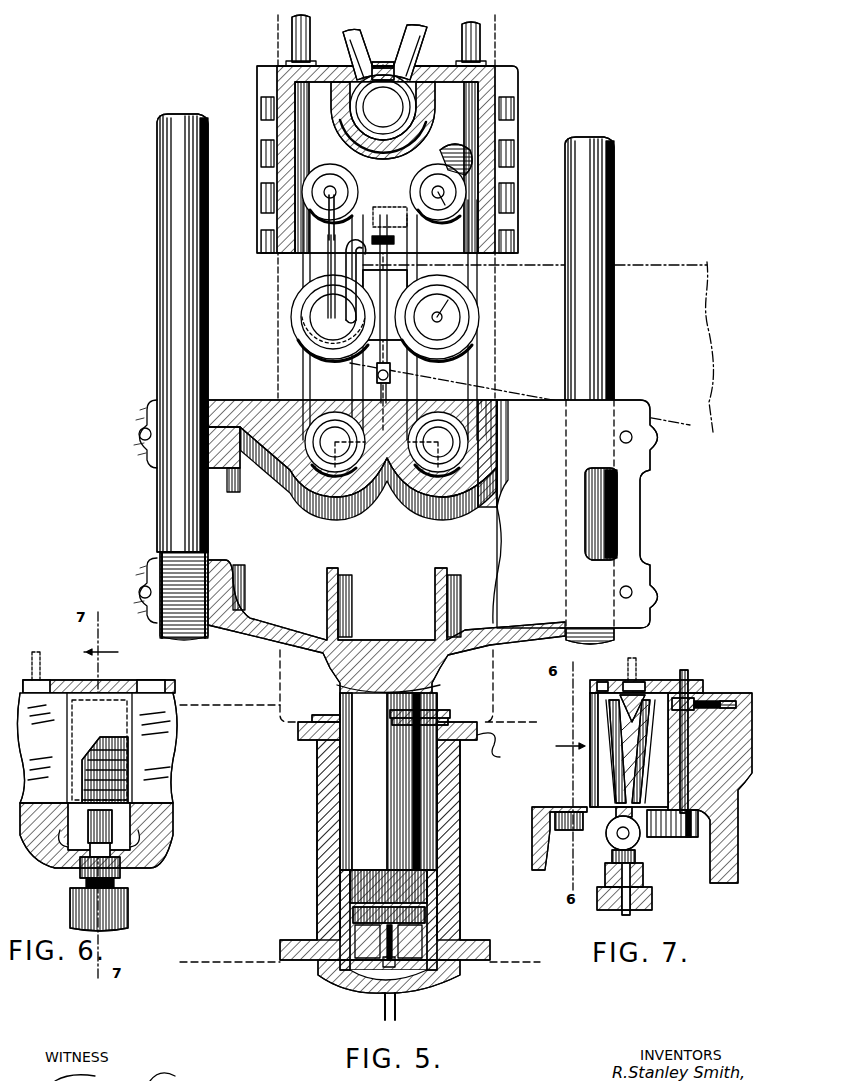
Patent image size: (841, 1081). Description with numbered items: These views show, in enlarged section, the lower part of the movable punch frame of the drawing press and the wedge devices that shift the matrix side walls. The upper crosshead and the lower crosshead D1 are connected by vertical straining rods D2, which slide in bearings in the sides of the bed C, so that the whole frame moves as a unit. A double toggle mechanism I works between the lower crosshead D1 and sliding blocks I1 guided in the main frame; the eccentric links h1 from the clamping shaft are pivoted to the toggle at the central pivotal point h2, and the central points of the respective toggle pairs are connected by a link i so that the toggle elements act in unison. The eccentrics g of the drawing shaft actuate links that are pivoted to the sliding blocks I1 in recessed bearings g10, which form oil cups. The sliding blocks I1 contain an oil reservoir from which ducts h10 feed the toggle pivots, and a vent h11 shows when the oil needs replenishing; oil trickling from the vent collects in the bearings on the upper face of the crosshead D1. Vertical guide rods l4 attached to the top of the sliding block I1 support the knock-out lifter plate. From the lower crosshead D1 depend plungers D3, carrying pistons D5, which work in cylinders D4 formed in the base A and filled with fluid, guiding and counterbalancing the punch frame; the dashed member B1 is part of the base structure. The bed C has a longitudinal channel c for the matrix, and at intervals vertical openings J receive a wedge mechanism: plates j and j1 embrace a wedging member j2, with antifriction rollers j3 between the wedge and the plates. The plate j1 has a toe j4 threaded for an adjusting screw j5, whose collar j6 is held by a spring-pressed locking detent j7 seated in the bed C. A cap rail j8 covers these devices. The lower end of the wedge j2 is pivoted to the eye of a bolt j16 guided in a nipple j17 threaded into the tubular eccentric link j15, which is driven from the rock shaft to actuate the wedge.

In FIG. 5, the vertical guide rods l4 is at (312, 30).
In FIG. 5, the eccentrics g is at (388, 40).
In FIG. 5, the recessed bearings g10 is at (420, 62).
In FIG. 5, the sliding blocks I1 is at (520, 113).
In FIG. 5, the straining rods D2 is at (168, 236).
In FIG. 5, the ducts h10 is at (325, 240).
In FIG. 5, the vent h11 is at (342, 258).
In FIG. 5, the toggle mechanism I is at (292, 318).
In FIG. 5, the central pivotal point h2 is at (318, 328).
In FIG. 5, the link i is at (397, 300).
In FIG. 5, the eccentric links h1 is at (705, 305).
In FIG. 5, the lower crosshead D1 is at (396, 561).
In FIG. 5, the bed B1 is at (480, 670).
In FIG. 5, the base A is at (492, 752).
In FIG. 5, the plungers D3 is at (360, 790).
In FIG. 5, the cylinders D4 is at (435, 870).
In FIG. 5, the pistons D5 is at (357, 945).
In FIG. 6, the cap rail j8 is at (150, 680).
In FIG. 7, the cap rail j8 is at (648, 680).
In FIG. 6, the plate j is at (88, 735).
In FIG. 7, the plate j is at (592, 720).
In FIG. 6, the vertical openings J is at (130, 763).
In FIG. 7, the vertical openings J is at (672, 693).
In FIG. 6, the antifriction rollers j3 is at (128, 783).
In FIG. 7, the antifriction rollers j3 is at (610, 760).
In FIG. 6, the wedging member j2 is at (120, 852).
In FIG. 7, the wedging member j2 is at (622, 690).
In FIG. 6, the bolt j16 is at (80, 860).
In FIG. 7, the bolt j16 is at (635, 853).
In FIG. 6, the nipple j17 is at (118, 884).
In FIG. 7, the nipple j17 is at (605, 878).
In FIG. 6, the eccentric link j15 is at (70, 908).
In FIG. 7, the eccentric link j15 is at (600, 908).
In FIG. 7, the adjusting screw j5 is at (692, 690).
In FIG. 7, the collar j6 is at (715, 700).
In FIG. 7, the locking detent j7 is at (736, 703).
In FIG. 7, the bed C is at (750, 760).
In FIG. 7, the longitudinal channel c is at (570, 802).
In FIG. 7, the plate j1 is at (670, 837).
In FIG. 7, the toe j4 is at (690, 837).